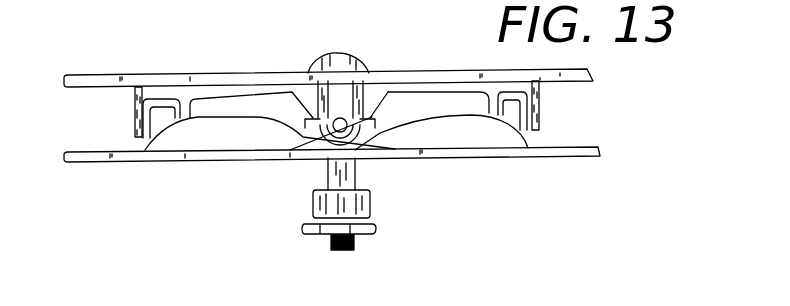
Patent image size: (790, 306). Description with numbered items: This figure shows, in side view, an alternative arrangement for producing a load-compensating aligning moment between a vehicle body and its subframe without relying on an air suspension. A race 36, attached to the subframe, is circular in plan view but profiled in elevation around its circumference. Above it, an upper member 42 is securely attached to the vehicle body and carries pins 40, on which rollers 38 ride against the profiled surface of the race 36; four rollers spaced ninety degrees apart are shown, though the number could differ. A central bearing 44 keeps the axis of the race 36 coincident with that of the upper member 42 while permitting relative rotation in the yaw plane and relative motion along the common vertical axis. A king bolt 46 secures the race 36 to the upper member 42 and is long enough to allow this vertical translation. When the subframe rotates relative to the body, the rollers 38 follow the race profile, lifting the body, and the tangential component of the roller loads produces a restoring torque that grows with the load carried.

The race 36 is at (210, 152).
The rollers 38 is at (357, 143).
The pins 40 is at (288, 150).
The upper member 42 is at (451, 68).
The central bearing 44 is at (292, 92).
The king bolt 46 is at (347, 251).